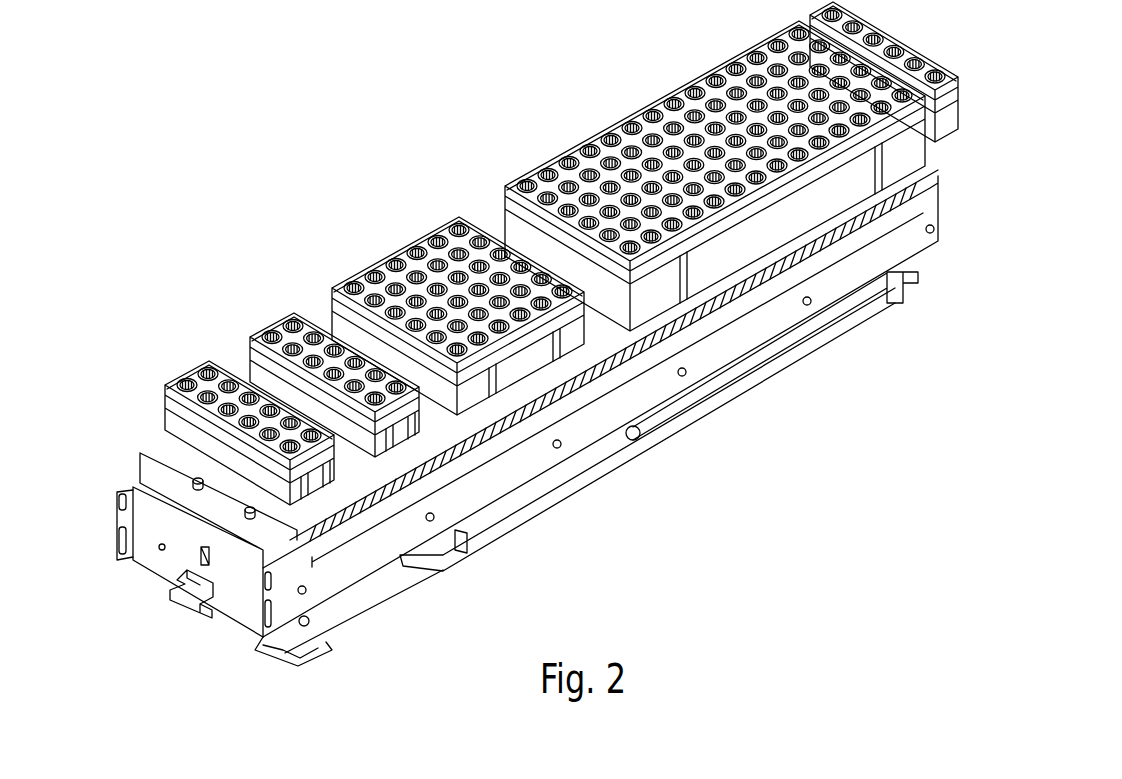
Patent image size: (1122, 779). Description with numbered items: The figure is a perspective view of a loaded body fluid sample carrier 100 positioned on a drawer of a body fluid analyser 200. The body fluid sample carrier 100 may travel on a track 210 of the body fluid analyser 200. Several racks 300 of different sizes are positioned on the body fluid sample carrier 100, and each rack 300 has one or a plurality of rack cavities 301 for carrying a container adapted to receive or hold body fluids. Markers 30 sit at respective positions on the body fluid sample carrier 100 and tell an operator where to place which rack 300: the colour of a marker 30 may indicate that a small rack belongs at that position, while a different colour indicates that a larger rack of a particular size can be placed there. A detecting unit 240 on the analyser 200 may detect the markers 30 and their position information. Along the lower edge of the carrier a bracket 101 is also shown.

The marker 30 is at (748, 385).
The body fluid sample carrier 100 is at (225, 498).
The bracket 101 is at (187, 613).
The body fluid analyser 200 is at (403, 610).
The track 210 is at (113, 508).
The detecting unit 240 is at (365, 543).
The rack 300 is at (513, 208).
The rack well 301 is at (676, 102).